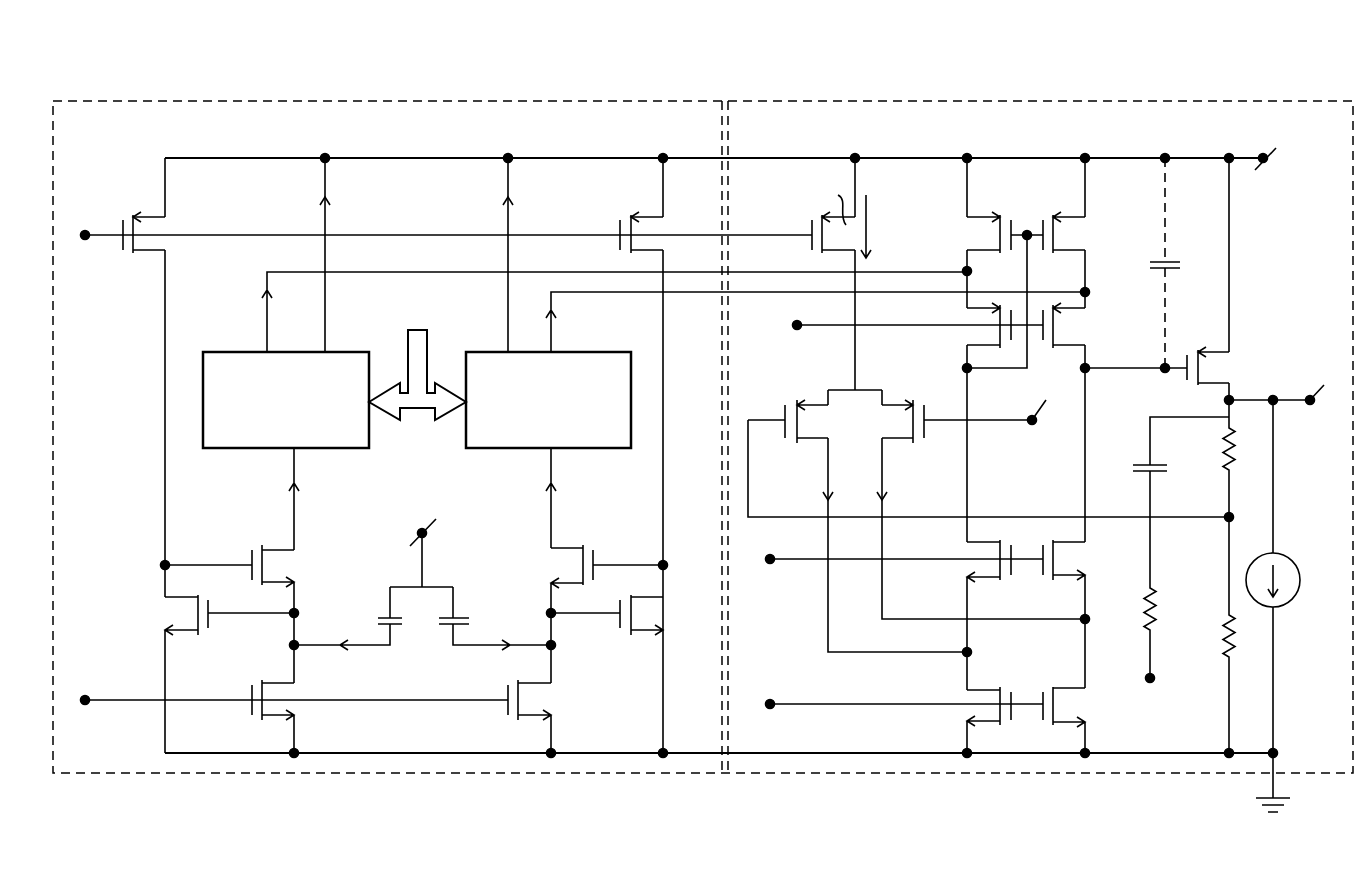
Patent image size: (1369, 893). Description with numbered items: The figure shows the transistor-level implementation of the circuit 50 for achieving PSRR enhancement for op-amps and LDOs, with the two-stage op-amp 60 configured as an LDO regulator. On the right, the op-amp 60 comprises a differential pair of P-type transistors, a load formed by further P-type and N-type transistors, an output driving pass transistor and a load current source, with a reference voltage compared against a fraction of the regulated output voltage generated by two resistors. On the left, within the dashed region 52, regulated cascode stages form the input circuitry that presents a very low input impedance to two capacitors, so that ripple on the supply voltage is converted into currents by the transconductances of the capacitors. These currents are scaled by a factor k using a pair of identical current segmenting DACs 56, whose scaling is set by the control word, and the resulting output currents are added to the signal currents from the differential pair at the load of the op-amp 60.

The circuit 50 is at (923, 72).
The current segmenting DAC compensation block 52 is at (492, 100).
The current segmenting digital-to-analog converter 56 is at (245, 449).
The 2-stage op-amp 60 is at (1130, 100).